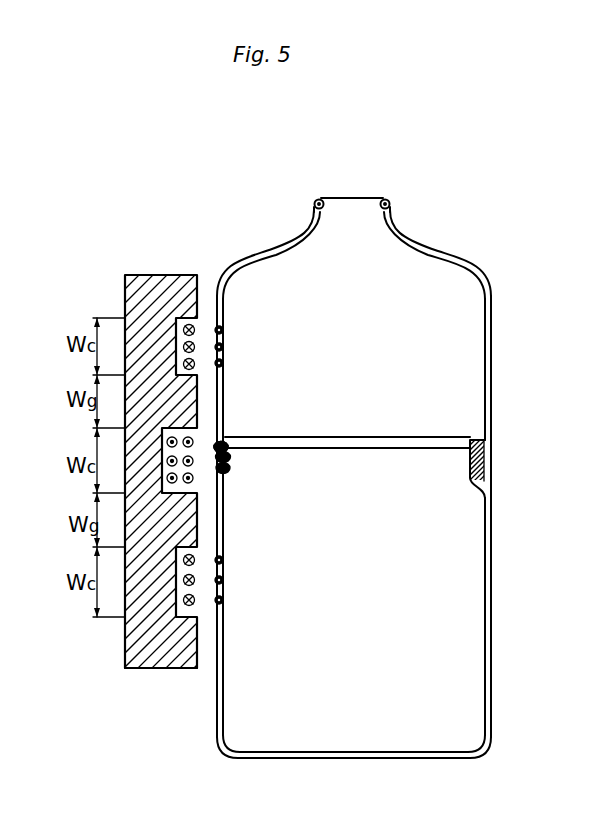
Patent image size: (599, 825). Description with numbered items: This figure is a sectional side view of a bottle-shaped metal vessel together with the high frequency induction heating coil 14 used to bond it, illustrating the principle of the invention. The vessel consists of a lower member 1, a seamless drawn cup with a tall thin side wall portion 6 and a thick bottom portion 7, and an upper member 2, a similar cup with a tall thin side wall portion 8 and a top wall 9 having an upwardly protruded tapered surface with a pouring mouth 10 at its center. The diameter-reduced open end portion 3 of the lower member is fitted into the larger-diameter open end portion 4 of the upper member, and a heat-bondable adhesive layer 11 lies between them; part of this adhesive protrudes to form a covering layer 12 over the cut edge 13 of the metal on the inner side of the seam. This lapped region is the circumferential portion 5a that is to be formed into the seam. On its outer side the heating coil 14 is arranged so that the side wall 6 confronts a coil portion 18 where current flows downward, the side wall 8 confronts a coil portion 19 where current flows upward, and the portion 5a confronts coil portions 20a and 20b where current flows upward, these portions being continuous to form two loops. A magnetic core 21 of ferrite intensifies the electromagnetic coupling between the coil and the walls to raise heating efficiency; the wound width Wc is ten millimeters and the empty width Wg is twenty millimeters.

The lower member 1 is at (360, 596).
The upper member 2 is at (362, 357).
The open end portion 3 is at (225, 476).
The open end portion 4 is at (212, 427).
The circumferential portion to be formed into a seam 5a is at (207, 438).
The side wall portion 6 is at (492, 636).
The bottom portion 7 is at (371, 760).
The side wall portion 8 is at (492, 364).
The top wall 9 is at (437, 243).
The pouring mouth 10 is at (350, 197).
The heat-bondable adhesive layer 11 is at (486, 456).
The covering layer 12 is at (461, 450).
The cut edge 13 is at (347, 423).
The high frequency induction heating coil 14 is at (118, 297).
The coil portion 18 is at (162, 612).
The coil portion 19 is at (193, 347).
The coil portion 20a is at (160, 482).
The coil portion 20b is at (190, 480).
The magnetic core 21 is at (162, 668).